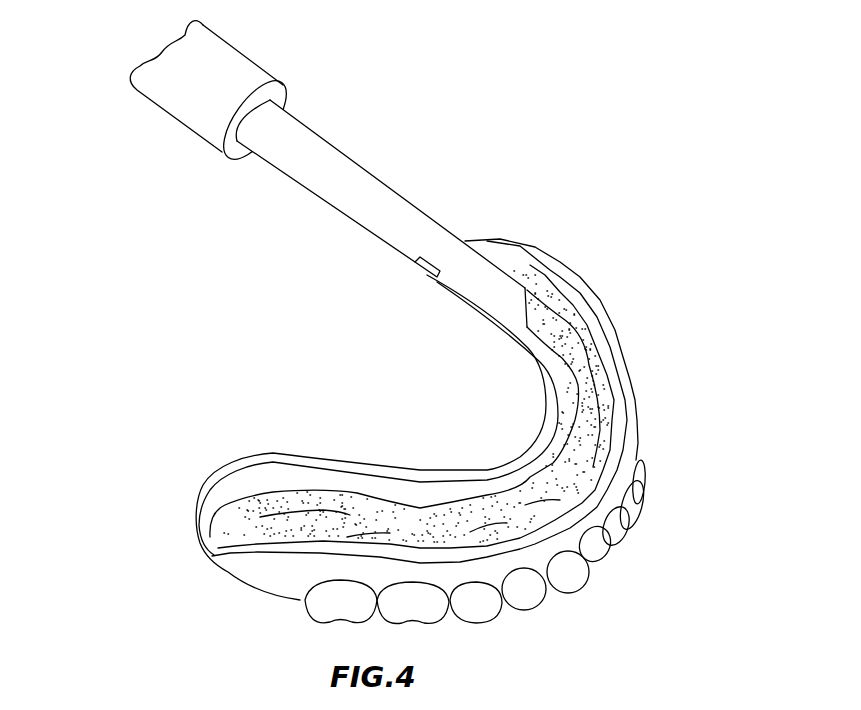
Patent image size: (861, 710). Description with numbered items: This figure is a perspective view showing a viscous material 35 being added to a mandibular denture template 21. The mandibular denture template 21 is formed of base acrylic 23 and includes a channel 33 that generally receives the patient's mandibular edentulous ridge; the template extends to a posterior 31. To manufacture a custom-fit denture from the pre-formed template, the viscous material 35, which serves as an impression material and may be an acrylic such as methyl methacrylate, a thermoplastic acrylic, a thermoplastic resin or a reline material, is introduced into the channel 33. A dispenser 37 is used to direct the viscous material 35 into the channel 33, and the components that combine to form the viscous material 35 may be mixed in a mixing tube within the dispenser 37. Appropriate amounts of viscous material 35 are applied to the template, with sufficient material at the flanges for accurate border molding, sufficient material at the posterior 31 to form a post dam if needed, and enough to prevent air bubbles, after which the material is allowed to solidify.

The mandibular denture template 21 is at (567, 273).
The base acrylic 23 is at (622, 373).
The posterior 31 is at (382, 419).
The channel 33 is at (425, 502).
The viscous material 35 is at (547, 380).
The dispenser 37 is at (355, 158).